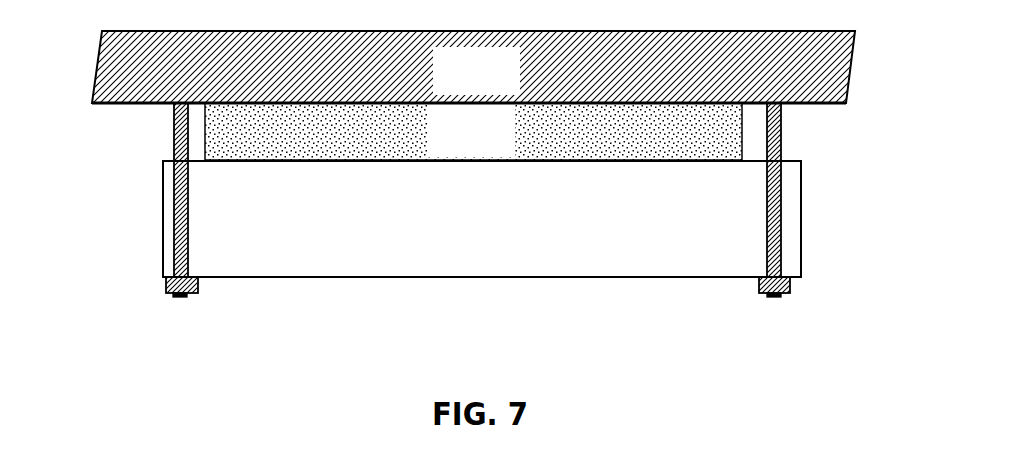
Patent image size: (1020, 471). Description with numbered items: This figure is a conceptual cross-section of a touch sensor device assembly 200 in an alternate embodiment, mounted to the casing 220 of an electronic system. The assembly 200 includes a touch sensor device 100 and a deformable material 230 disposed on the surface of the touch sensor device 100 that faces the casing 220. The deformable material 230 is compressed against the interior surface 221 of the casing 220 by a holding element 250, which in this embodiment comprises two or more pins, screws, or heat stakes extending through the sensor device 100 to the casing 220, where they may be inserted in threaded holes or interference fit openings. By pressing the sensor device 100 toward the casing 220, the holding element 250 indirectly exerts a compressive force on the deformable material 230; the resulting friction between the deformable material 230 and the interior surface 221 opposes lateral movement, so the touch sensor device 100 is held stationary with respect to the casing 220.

The touch sensor device 100 is at (503, 234).
The touch sensor device assembly 200 is at (134, 255).
The casing 220 is at (500, 82).
The interior surface 221 is at (130, 103).
The deformable material 230 is at (445, 142).
The holding element 250 is at (185, 307).